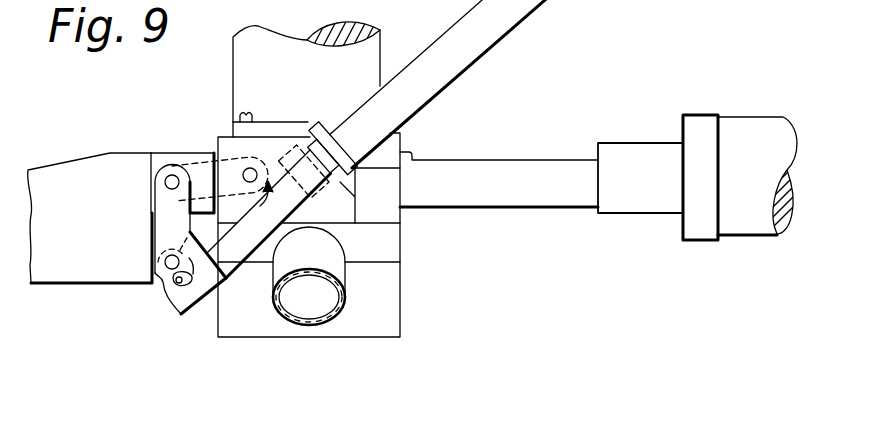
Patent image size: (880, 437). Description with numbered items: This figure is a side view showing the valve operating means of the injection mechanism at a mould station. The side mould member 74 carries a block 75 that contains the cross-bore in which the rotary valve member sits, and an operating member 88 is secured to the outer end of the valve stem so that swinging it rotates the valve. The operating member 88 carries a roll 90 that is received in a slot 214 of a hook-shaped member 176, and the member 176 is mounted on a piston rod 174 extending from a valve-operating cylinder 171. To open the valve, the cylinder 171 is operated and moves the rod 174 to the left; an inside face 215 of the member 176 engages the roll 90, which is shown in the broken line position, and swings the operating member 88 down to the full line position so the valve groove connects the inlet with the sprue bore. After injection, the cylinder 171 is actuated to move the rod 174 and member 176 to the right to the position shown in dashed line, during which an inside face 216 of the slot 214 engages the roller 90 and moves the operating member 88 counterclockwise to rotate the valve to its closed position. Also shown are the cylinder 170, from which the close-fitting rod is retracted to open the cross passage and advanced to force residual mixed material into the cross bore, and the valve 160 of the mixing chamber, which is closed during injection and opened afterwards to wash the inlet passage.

The side mould member 74 is at (117, 157).
The block 75 is at (177, 155).
The operating member 88 is at (162, 228).
The roll 90 is at (250, 167).
The valve 160 is at (325, 320).
The cylinder 170 is at (748, 123).
The cylinder 171 is at (483, 54).
The piston rod 174 is at (242, 240).
The hook-shaped member 176 is at (184, 309).
The slot 214 is at (192, 318).
The inside face 215 is at (221, 283).
The inside face 216 is at (176, 300).